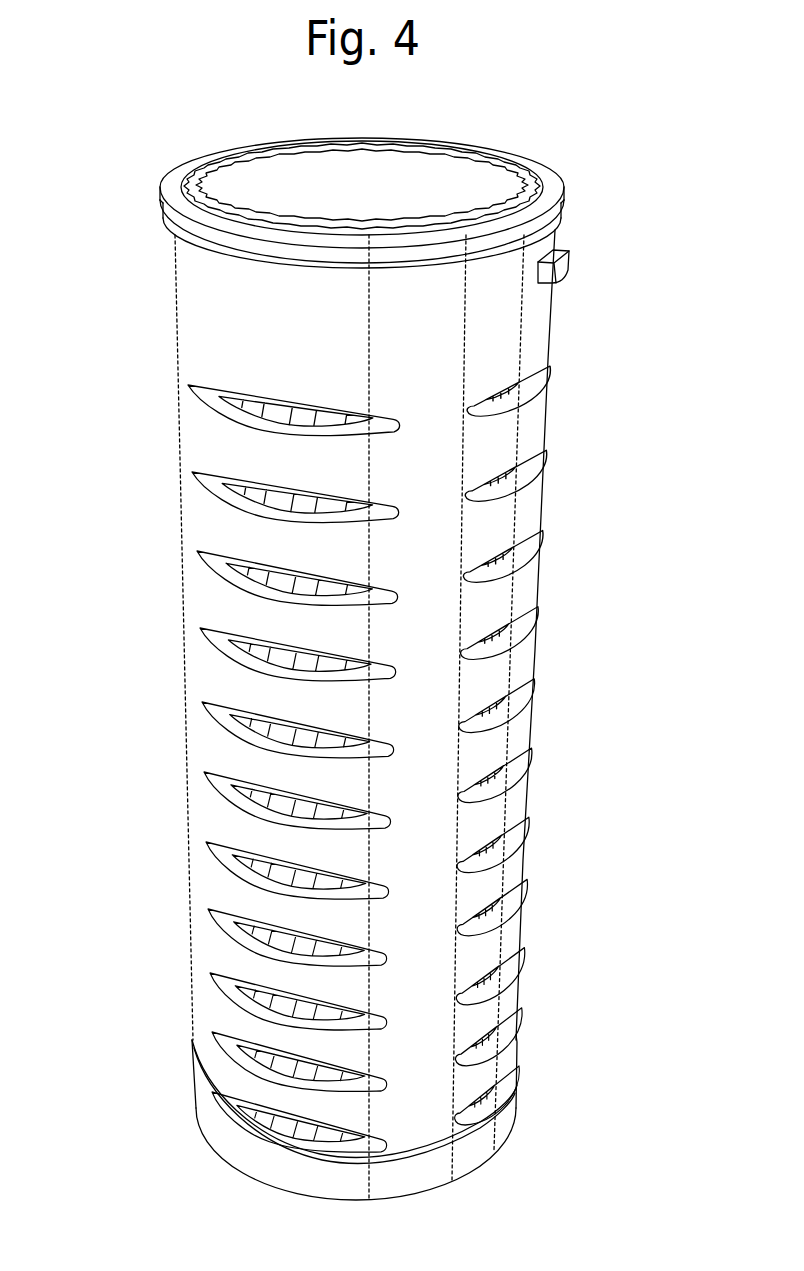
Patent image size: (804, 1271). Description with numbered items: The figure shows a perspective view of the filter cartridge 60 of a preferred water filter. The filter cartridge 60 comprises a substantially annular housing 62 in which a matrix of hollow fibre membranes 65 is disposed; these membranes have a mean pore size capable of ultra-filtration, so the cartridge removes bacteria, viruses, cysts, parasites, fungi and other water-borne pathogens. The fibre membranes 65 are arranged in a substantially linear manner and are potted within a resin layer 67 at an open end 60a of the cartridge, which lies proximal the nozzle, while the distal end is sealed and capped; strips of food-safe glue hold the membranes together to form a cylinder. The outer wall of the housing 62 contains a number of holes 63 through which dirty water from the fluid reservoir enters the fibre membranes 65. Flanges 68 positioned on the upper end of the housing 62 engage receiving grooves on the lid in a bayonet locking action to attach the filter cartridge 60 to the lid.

The filter cartridge 60 is at (618, 166).
The open end 60a is at (190, 160).
The housing 62 is at (540, 327).
The holes 63 is at (215, 571).
The hollow fibre membranes 65 is at (258, 405).
The resin layer 67 is at (447, 173).
The flanges 68 is at (560, 272).